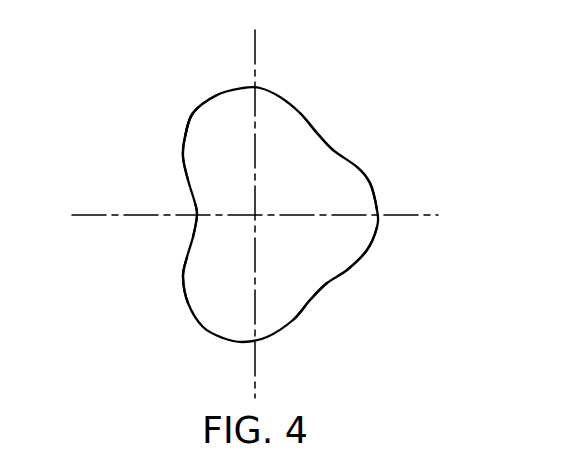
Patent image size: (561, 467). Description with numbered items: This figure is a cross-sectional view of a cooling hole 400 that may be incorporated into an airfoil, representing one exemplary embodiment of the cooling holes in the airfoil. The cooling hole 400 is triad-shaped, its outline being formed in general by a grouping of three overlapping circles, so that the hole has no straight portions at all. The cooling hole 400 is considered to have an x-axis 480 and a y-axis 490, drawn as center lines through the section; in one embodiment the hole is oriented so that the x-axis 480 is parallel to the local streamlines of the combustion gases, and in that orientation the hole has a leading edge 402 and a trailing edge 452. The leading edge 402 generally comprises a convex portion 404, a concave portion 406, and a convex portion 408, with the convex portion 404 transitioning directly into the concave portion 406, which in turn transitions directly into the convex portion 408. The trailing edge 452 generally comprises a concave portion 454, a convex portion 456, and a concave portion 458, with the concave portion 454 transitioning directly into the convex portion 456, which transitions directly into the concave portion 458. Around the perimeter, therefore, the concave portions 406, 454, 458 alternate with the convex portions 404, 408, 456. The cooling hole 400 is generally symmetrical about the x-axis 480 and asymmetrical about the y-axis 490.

The cooling hole 400 is at (368, 88).
The leading edge 402 is at (175, 139).
The convex portion 404 is at (197, 115).
The concave portion 406 is at (195, 222).
The convex portion 408 is at (187, 283).
The trailing edge 452 is at (373, 183).
The concave portion 454 is at (320, 145).
The convex portion 456 is at (363, 255).
The concave portion 458 is at (313, 293).
The x-axis 480 is at (430, 215).
The y-axis 490 is at (257, 48).